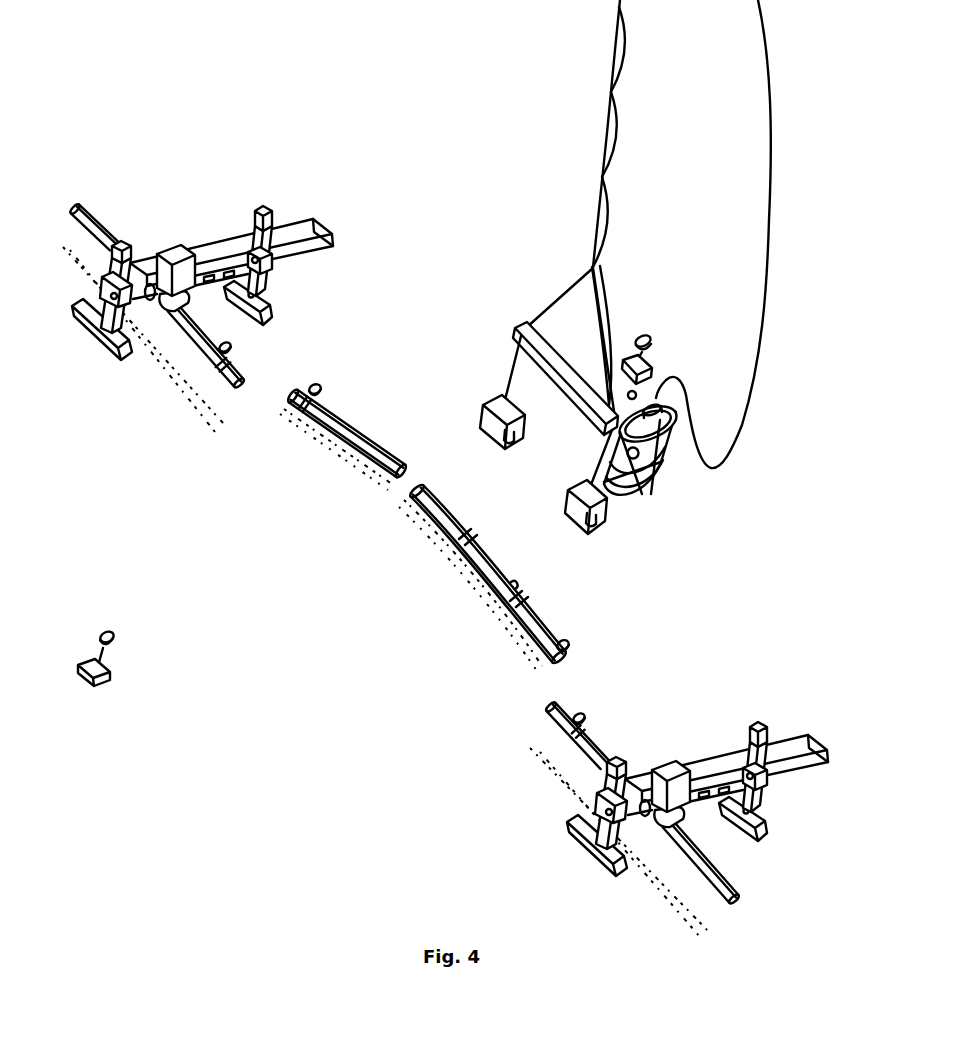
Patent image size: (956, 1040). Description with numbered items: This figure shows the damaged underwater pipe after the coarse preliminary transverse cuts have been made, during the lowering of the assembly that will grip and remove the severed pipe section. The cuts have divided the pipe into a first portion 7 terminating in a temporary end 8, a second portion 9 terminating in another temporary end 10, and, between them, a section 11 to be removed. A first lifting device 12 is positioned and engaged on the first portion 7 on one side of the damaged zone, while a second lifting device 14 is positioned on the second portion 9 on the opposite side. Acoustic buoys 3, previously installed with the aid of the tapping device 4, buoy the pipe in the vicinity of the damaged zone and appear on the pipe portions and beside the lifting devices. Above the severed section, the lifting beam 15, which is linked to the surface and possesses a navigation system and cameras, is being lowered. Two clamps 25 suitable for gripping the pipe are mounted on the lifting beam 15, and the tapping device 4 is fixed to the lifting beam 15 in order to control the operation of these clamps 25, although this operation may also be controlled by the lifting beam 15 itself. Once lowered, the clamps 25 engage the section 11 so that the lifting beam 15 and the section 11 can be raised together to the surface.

The acoustic buoys 3 is at (228, 346).
The tapping device 4 is at (662, 478).
The first portion 7 is at (113, 229).
The temporary end 8 is at (232, 388).
The second portion 9 is at (708, 884).
The temporary end 10 is at (551, 707).
The section to be removed 11 is at (435, 517).
The first lifting device 12 is at (234, 243).
The second lifting device 14 is at (725, 762).
The lifting beam 15 is at (514, 333).
The clamps 25 is at (487, 440).